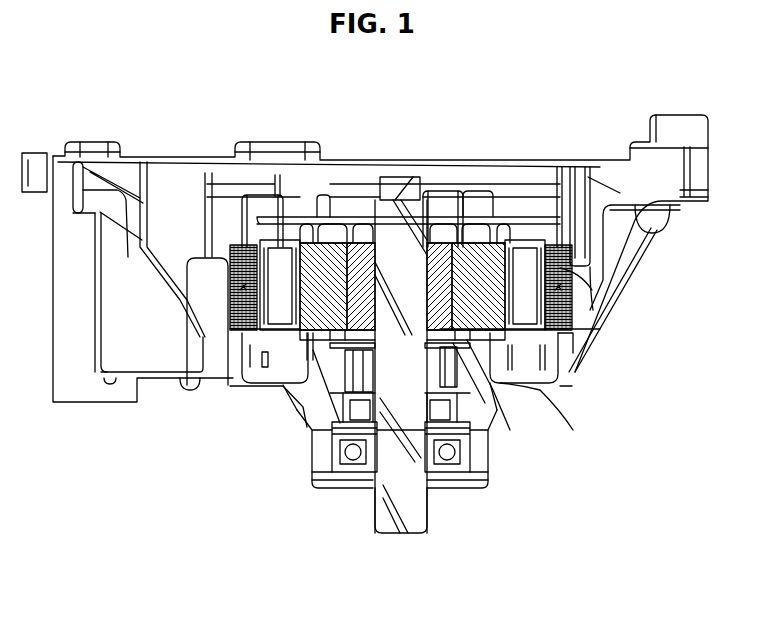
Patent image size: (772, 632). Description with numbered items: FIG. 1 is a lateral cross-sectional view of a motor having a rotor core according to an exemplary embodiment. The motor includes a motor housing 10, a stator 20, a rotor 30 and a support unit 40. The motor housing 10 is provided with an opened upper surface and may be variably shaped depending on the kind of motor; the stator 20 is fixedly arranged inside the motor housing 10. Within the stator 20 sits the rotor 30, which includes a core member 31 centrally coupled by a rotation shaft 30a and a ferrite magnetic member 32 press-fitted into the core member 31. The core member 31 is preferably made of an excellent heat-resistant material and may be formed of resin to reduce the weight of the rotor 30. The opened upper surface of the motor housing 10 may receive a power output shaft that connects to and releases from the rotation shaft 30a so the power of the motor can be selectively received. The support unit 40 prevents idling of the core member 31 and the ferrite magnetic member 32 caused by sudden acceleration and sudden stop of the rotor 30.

The motor housing 10 is at (604, 250).
The stator 20 is at (560, 305).
The rotor 30 is at (600, 450).
The rotation shaft 30a is at (397, 535).
The core member 31 is at (505, 418).
The ferrite magnetic member 32 is at (548, 385).
The support unit 40 is at (455, 236).